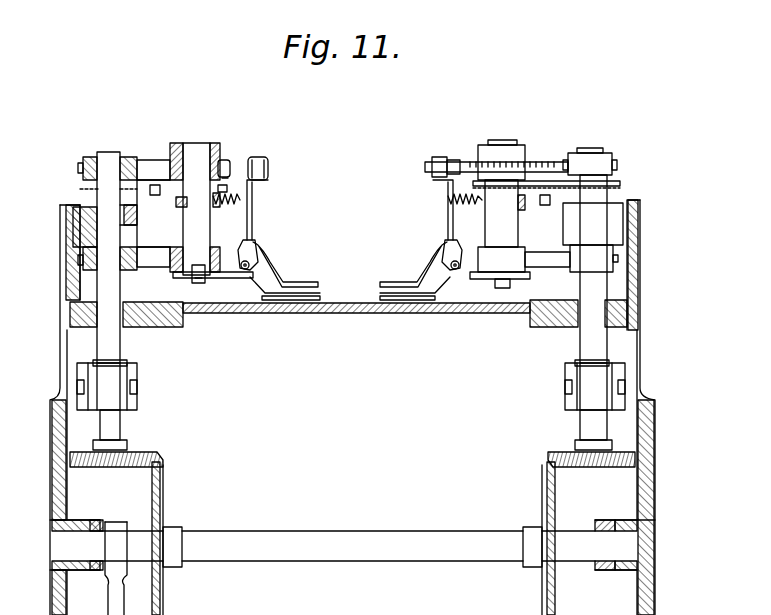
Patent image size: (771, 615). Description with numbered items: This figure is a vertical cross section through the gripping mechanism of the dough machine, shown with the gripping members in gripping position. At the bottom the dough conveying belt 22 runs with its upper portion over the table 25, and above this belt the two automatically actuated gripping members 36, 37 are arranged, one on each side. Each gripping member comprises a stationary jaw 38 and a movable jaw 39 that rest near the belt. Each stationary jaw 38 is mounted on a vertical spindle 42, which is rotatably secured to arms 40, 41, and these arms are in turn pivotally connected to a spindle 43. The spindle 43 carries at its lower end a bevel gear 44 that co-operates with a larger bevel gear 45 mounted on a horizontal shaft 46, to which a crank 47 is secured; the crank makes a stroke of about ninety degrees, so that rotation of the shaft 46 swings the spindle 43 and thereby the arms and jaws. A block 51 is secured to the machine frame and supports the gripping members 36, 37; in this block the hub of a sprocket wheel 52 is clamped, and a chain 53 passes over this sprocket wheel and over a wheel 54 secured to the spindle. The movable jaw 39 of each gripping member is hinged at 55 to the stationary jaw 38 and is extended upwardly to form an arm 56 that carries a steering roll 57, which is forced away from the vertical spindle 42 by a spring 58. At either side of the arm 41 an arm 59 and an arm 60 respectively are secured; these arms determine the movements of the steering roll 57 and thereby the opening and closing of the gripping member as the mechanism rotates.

The dough conveying belt 22 is at (212, 305).
The table 25 is at (345, 310).
The gripping member 36 is at (222, 247).
The gripping member 37 is at (445, 241).
The stationary jaw 38 is at (268, 302).
The movable jaw 39 is at (290, 282).
The arm 40 is at (156, 264).
The arm 41 is at (155, 163).
The vertical spindle 42 is at (228, 170).
The spindle 43 is at (112, 158).
The bevel gear 44 is at (135, 457).
The bevel gear 45 is at (163, 498).
The shaft 46 is at (330, 536).
The crank 47 is at (110, 596).
The block 51 is at (80, 228).
The sprocket wheel 52 is at (80, 191).
The chain 53 is at (140, 190).
The wheel 54 is at (208, 210).
The hinge 55 is at (248, 276).
The arm 56 is at (254, 212).
The steering roll 57 is at (270, 165).
The spring 58 is at (347, 215).
The arm 59 is at (227, 166).
The arm 60 is at (432, 166).